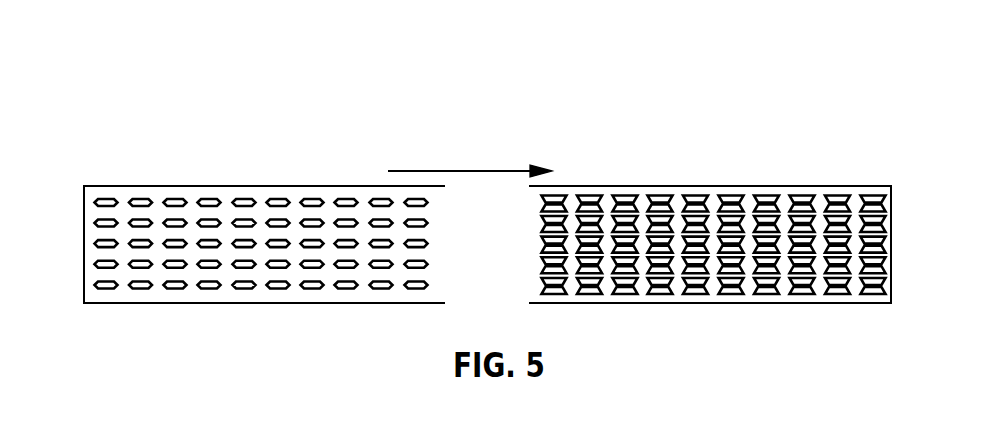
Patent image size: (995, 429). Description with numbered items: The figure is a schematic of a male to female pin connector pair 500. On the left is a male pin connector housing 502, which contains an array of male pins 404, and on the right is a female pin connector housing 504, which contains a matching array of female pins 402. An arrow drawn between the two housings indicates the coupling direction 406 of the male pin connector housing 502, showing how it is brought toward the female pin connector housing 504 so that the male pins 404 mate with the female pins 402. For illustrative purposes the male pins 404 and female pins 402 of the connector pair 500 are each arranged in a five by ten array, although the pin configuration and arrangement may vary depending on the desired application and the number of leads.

The connector pair 500 is at (184, 75).
The male pin connector housing 502 is at (136, 186).
The male pins 404 is at (275, 199).
The coupling direction 406 is at (457, 171).
The female pins 402 is at (698, 197).
The female pin connector housing 504 is at (816, 186).